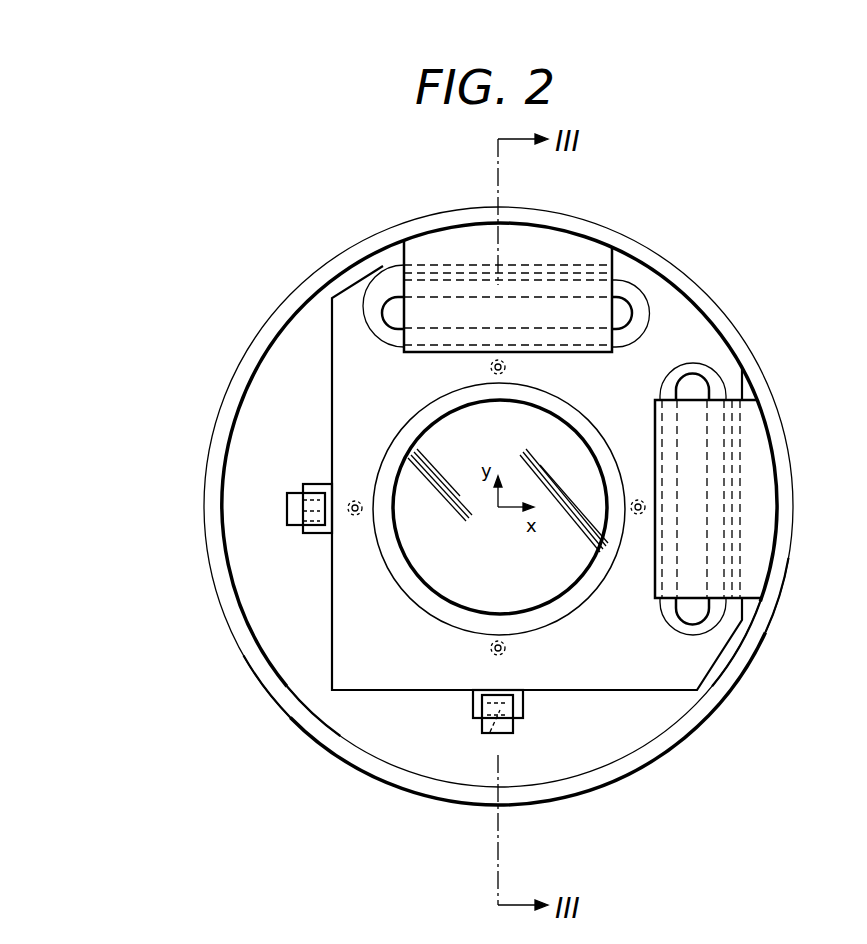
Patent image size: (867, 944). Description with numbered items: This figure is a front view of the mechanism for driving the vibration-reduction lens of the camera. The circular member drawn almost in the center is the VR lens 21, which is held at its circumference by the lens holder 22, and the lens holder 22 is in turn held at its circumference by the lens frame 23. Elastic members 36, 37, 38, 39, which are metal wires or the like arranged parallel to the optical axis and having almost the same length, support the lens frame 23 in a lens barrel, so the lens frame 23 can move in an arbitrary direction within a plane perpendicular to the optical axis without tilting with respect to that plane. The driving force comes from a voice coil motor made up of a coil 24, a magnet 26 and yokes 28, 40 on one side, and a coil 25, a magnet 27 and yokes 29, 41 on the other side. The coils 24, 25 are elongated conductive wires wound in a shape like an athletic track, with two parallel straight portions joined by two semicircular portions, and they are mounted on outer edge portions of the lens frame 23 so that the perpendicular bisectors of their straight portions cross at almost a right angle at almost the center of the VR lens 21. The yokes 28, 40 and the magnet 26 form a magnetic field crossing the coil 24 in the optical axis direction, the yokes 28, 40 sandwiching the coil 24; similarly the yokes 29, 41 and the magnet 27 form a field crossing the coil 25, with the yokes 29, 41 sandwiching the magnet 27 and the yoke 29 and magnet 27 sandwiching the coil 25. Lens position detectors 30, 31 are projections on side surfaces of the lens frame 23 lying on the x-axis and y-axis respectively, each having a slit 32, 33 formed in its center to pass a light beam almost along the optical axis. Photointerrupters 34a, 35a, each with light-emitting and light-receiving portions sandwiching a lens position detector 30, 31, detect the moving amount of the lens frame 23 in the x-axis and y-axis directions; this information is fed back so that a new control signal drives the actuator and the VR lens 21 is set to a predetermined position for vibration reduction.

The VR lens 21 is at (450, 568).
The lens holder 22 is at (450, 617).
The lens frame 23 is at (345, 674).
The coil 24 is at (646, 300).
The coil 25 is at (712, 385).
The magnet 26 is at (598, 300).
The magnet 27 is at (705, 627).
The yoke 28 is at (565, 300).
The yoke 29 is at (700, 562).
The lens position detector 30 is at (313, 535).
The lens position detector 31 is at (523, 705).
The slit 32 is at (287, 506).
The slit 33 is at (483, 733).
The photointerrupter 34a is at (287, 518).
The photointerrupter 35a is at (513, 735).
The elastic member 36 is at (490, 367).
The elastic member 37 is at (354, 500).
The elastic member 38 is at (506, 650).
The elastic member 39 is at (640, 514).
The yoke 40 is at (525, 300).
The yoke 41 is at (690, 527).